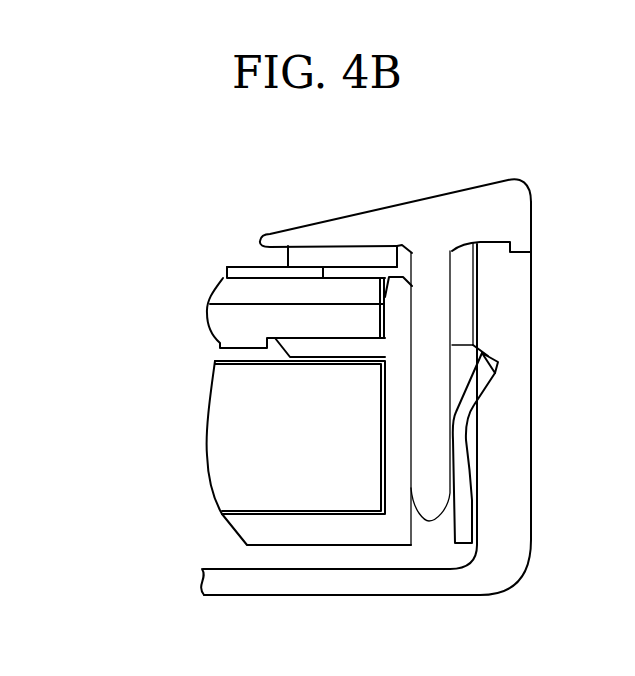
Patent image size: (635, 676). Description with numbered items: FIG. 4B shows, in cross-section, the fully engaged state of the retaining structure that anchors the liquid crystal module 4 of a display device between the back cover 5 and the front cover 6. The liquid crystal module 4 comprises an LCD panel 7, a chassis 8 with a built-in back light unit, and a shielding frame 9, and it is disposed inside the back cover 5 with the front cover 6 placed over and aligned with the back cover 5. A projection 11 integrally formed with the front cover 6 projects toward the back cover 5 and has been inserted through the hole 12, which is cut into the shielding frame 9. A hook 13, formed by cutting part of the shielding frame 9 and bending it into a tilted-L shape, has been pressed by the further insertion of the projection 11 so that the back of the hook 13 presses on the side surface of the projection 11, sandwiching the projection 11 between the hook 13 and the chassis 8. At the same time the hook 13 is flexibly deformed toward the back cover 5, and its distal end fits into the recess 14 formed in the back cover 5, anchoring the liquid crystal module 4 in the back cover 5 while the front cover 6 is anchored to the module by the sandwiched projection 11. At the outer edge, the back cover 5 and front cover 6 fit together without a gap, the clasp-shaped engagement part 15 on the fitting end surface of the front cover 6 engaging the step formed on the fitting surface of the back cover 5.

The liquid crystal module 4 is at (138, 421).
The back cover 5 is at (515, 499).
The front cover 6 is at (467, 189).
The LCD panel 7 is at (228, 321).
The chassis 8 is at (252, 527).
The shielding frame 9 is at (338, 252).
The projection 11 is at (418, 433).
The hole 12 is at (411, 250).
The hook 13 is at (475, 383).
The recess 14 is at (492, 358).
The engagement part 15 is at (515, 253).